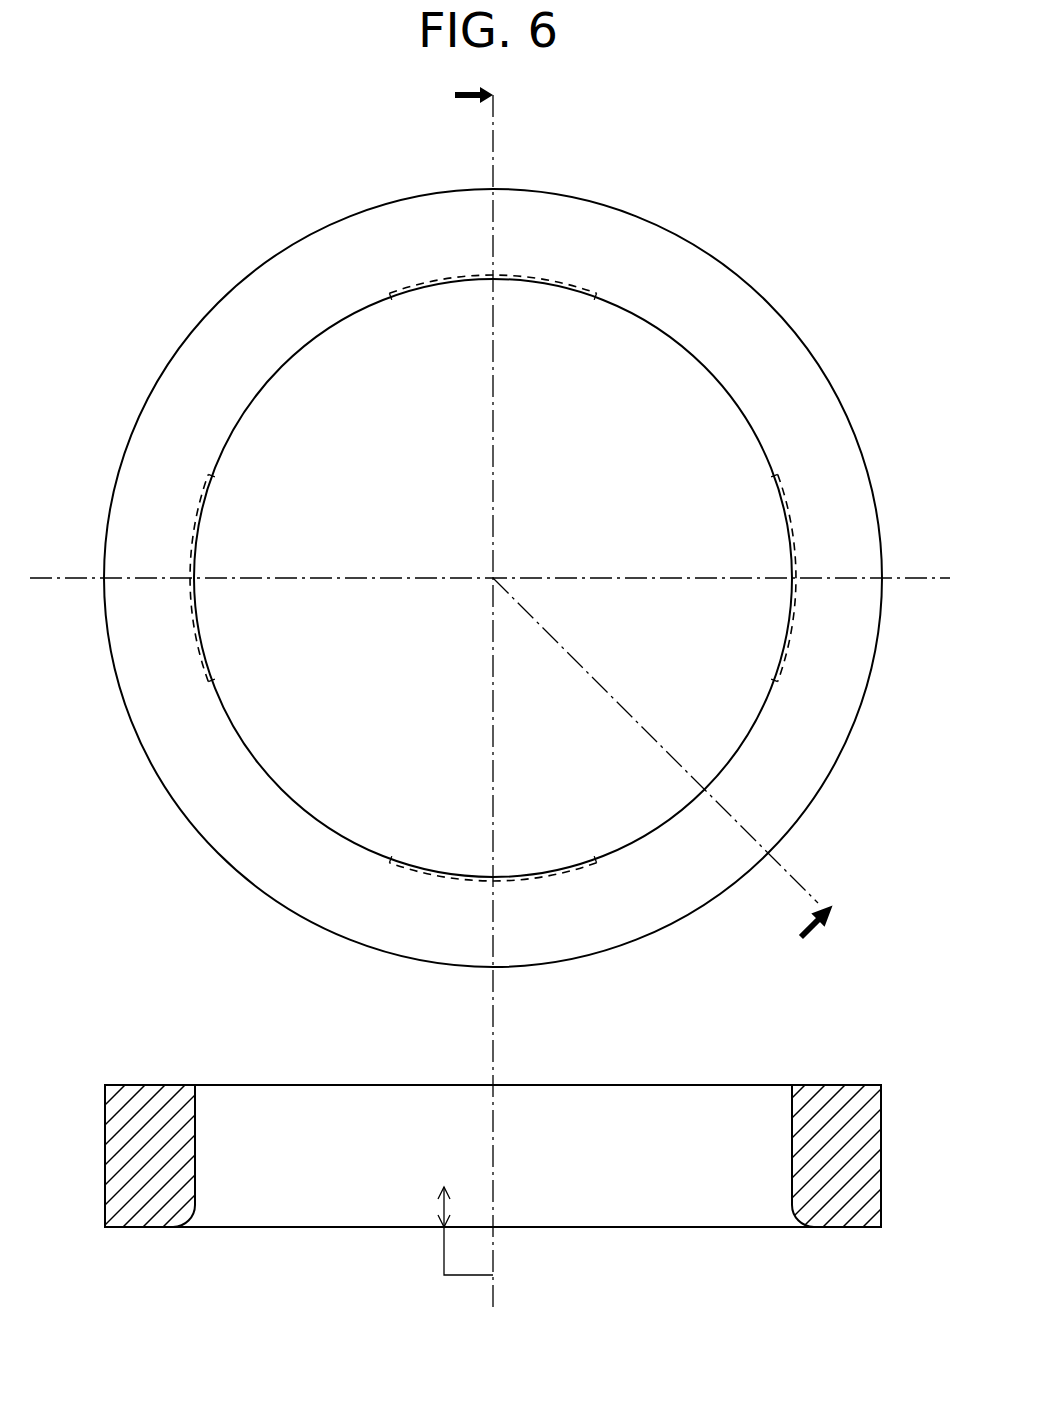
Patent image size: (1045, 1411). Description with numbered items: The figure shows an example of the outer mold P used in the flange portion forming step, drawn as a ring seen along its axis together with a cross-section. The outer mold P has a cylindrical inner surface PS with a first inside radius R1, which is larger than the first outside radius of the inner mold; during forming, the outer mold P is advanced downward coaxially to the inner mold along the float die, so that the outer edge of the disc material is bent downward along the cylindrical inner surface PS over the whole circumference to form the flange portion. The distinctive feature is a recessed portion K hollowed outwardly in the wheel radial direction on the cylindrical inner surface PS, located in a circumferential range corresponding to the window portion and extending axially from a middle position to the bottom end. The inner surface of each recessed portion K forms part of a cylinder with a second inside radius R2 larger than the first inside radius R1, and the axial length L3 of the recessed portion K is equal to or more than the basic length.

The outer mold P is at (706, 288).
The cylindrical inner surface PS is at (253, 401).
The recessed portion K is at (530, 272).
The first inside radius R1 is at (700, 370).
The second inside radius R2 is at (558, 287).
The length of the recessed portion L3 is at (465, 1231).